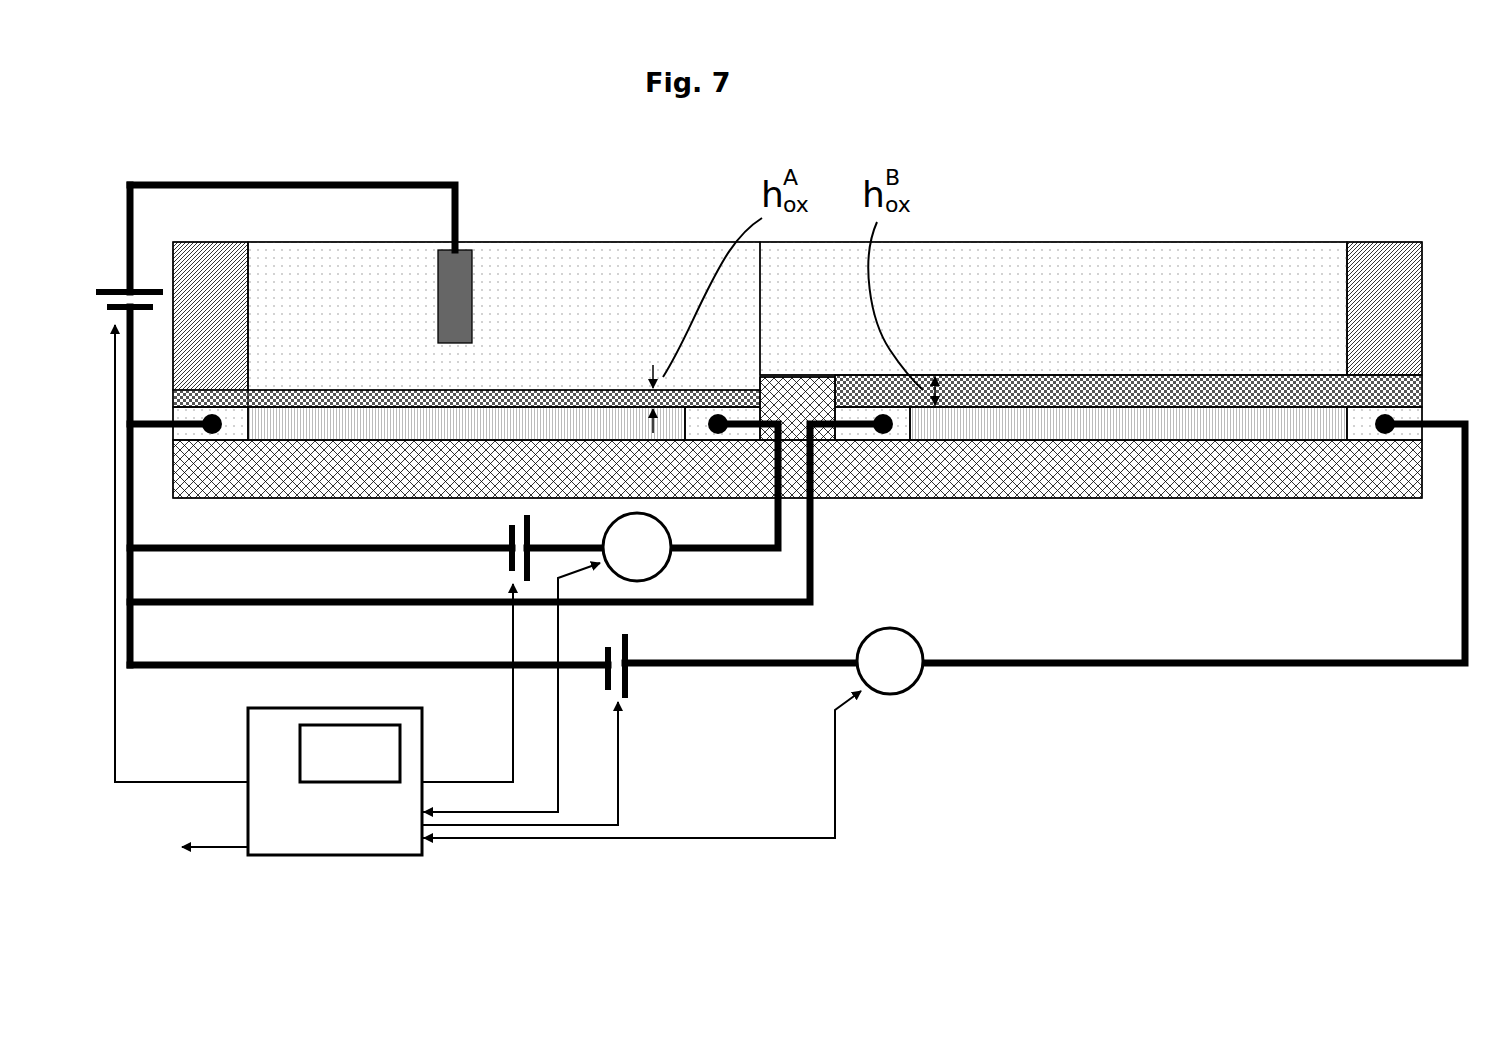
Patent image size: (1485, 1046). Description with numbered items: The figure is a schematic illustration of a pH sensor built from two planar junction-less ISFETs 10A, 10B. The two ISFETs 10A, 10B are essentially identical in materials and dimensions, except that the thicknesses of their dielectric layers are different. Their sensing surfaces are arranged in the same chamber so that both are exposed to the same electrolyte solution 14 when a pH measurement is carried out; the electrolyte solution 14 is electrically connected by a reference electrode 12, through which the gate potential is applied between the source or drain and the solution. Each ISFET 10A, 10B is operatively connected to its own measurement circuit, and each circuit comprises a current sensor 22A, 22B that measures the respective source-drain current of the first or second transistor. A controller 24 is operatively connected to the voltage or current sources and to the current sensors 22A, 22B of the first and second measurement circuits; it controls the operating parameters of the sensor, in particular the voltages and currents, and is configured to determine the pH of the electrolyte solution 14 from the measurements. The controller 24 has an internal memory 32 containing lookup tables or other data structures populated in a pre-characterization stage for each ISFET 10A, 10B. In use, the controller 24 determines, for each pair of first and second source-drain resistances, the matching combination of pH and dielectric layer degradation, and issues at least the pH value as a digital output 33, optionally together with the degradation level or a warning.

The planar junction-less ISFET 10A is at (540, 334).
The planar junction-less ISFET 10B is at (1098, 330).
The reference electrode 12 is at (458, 288).
The electrolyte solution 14 is at (1225, 275).
The current sensor 22A is at (670, 558).
The current sensor 22B is at (923, 647).
The controller 24 is at (248, 772).
The internal memory 32 is at (400, 733).
The digital output 33 is at (217, 843).